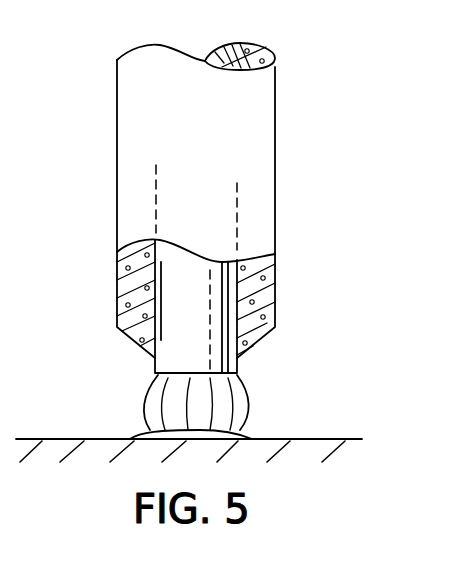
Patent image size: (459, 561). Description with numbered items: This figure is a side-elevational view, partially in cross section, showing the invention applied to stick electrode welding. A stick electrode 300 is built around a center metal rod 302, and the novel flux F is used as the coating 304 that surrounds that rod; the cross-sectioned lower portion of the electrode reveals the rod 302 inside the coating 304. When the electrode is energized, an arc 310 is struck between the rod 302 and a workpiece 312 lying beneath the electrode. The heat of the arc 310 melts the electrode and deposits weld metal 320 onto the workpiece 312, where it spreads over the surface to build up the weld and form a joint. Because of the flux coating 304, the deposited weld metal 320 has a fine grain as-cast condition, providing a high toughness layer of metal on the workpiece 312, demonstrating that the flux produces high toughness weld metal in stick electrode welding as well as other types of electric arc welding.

The stick electrode 300 is at (277, 112).
The center metal rod 302 is at (205, 288).
The coating 304 is at (130, 287).
The arc 310 is at (240, 402).
The workpiece 312 is at (330, 438).
The weld metal 320 is at (140, 435).